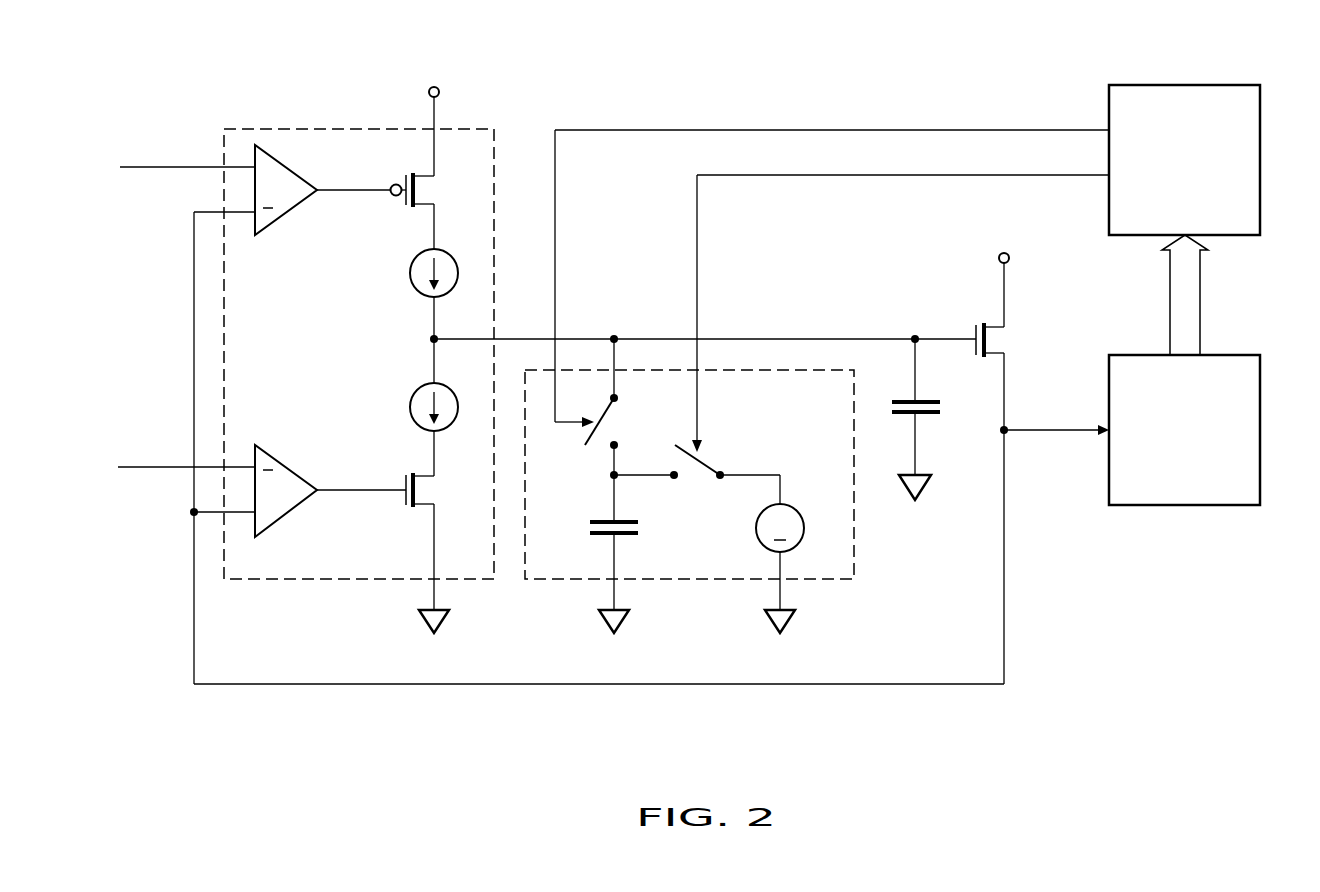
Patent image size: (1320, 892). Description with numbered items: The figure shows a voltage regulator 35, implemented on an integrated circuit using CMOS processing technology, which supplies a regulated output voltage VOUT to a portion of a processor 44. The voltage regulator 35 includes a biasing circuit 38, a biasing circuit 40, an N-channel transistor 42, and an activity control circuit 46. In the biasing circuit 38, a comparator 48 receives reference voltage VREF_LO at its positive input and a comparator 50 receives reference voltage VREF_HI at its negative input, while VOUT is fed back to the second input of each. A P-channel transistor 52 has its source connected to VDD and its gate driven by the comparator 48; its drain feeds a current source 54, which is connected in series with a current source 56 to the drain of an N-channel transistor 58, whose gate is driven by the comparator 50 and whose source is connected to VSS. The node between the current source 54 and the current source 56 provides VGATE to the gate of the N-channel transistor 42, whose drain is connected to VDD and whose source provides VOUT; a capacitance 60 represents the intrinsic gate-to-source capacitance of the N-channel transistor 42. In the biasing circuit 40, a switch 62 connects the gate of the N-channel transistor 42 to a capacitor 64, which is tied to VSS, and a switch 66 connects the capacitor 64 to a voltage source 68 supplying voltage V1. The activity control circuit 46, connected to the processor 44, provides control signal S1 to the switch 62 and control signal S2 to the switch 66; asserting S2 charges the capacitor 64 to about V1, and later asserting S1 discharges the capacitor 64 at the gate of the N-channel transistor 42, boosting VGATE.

The voltage regulator 35 is at (1154, 703).
The biasing circuit 38 is at (290, 127).
The biasing circuit 40 is at (854, 553).
The N-channel transistor 42 is at (990, 337).
The processor 44 is at (1201, 482).
The activity control circuit 46 is at (1260, 131).
The comparator 48 is at (290, 217).
The comparator 50 is at (282, 460).
The P-channel transistor 52 is at (420, 190).
The current source 54 is at (410, 273).
The current source 56 is at (410, 407).
The N-channel transistor 58 is at (420, 490).
The capacitance 60 is at (925, 415).
The switch 62 is at (610, 425).
The capacitor 64 is at (598, 521).
The switch 66 is at (697, 466).
The voltage source 68 is at (795, 507).